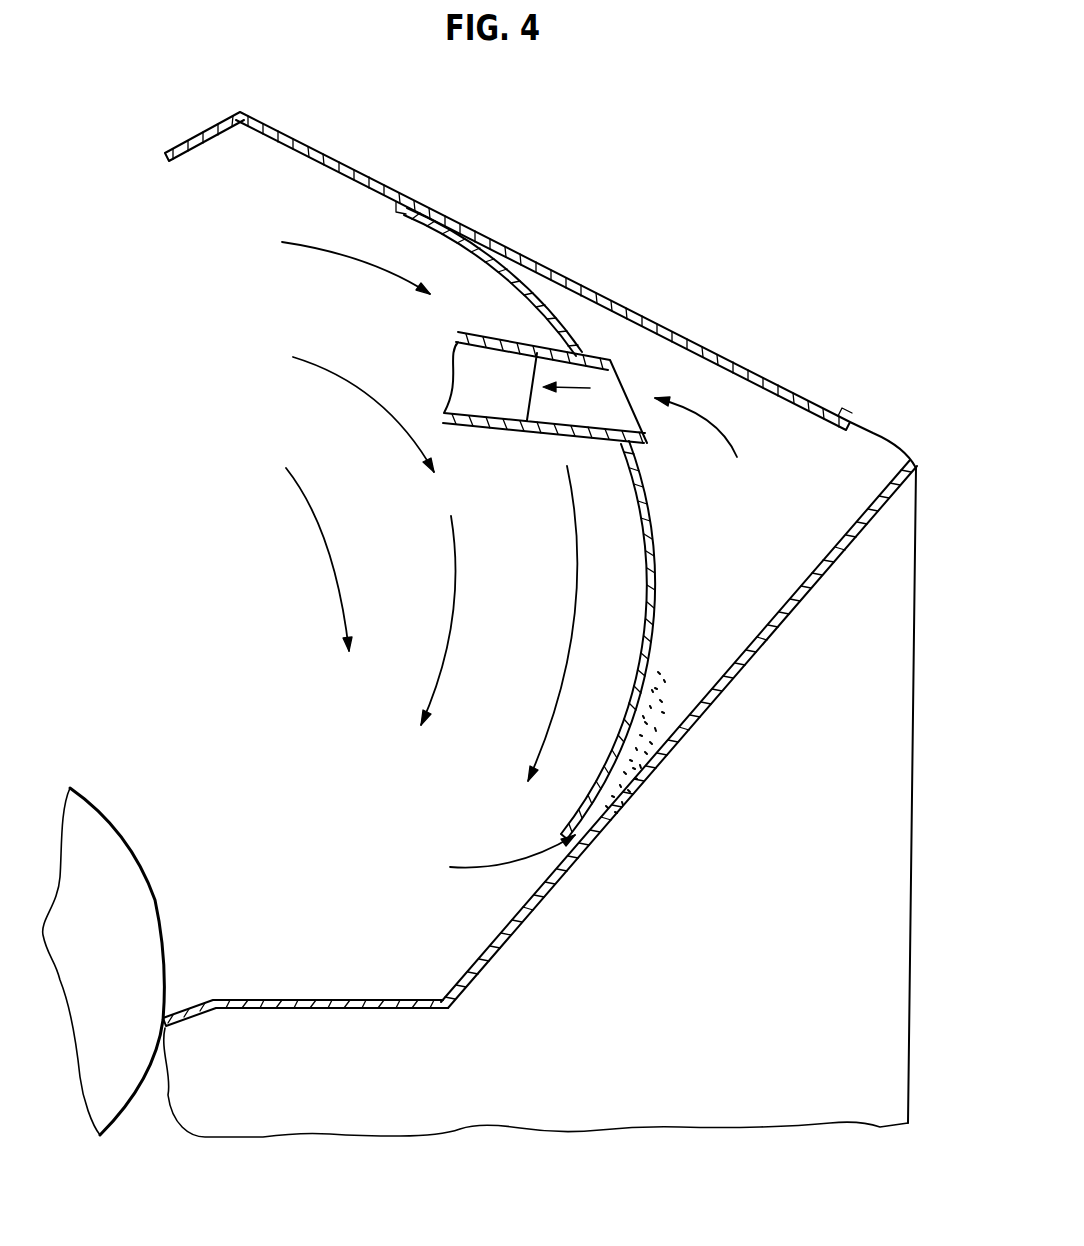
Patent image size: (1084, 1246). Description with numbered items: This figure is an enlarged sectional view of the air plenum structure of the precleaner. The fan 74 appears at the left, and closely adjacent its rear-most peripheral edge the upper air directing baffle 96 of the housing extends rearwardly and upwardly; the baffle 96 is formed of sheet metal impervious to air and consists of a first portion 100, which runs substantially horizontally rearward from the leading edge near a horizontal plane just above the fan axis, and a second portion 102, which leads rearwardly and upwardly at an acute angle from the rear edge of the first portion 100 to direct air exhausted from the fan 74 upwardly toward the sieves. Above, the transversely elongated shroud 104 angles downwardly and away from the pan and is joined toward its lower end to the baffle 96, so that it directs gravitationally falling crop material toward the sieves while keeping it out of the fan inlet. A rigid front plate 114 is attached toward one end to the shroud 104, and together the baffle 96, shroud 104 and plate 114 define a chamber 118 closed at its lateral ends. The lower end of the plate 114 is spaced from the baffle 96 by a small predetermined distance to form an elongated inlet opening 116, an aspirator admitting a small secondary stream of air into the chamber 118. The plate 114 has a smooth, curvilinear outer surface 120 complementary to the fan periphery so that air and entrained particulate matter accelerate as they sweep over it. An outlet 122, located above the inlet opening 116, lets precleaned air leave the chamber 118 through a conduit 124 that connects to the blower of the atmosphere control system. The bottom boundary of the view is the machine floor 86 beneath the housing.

The fan 74 is at (137, 843).
The floor 86 is at (822, 1100).
The upper air directing baffle 96 is at (298, 985).
The first portion 100 is at (345, 1010).
The second portion 102 is at (767, 635).
The shroud 104 is at (388, 187).
The front plate 114 is at (643, 630).
The inlet opening 116 is at (593, 813).
The chamber 118 is at (805, 537).
The outer surface 120 is at (645, 515).
The outlet 122 is at (643, 425).
The conduit 124 is at (480, 427).